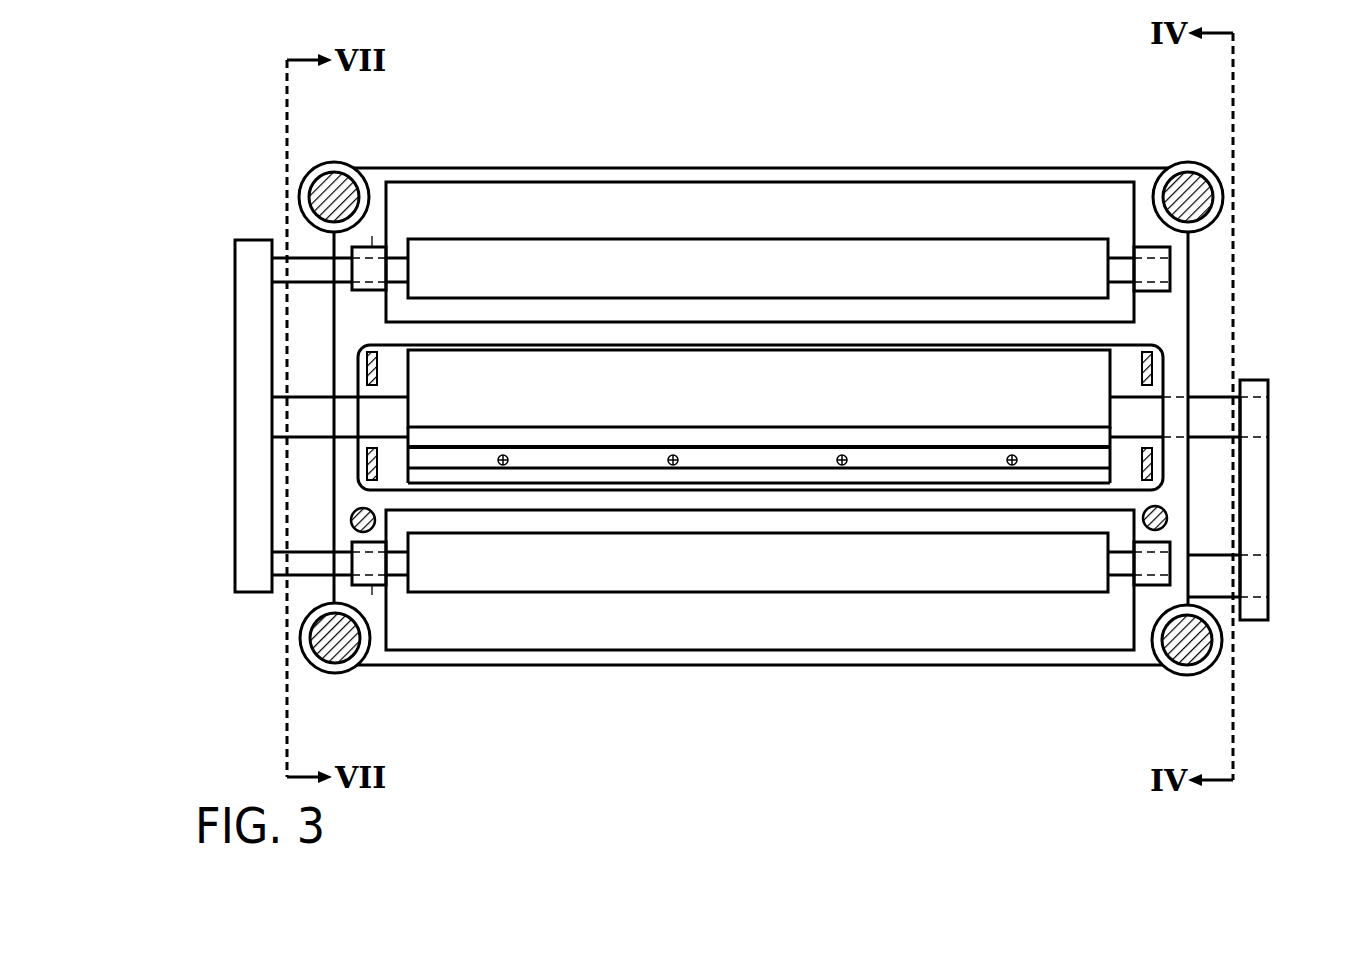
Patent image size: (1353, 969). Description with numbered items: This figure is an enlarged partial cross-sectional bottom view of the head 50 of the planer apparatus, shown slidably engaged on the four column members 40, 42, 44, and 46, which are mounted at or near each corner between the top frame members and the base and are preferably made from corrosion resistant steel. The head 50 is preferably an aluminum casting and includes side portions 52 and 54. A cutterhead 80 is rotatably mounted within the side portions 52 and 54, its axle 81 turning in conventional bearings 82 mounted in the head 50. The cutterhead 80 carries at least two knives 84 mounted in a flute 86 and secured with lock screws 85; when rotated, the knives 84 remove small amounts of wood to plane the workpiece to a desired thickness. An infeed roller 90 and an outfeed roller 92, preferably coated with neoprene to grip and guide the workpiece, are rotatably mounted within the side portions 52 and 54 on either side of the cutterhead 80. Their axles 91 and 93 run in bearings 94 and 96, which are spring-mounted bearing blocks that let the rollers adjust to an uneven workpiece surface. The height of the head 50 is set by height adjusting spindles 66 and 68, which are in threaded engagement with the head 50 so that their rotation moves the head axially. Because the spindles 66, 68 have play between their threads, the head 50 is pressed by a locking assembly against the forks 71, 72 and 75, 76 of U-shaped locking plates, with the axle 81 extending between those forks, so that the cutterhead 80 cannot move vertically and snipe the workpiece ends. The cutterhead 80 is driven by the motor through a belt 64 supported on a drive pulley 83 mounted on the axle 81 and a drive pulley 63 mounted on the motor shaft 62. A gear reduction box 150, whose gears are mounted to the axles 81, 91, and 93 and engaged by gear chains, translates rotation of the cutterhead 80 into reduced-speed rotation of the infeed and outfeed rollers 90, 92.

The column member 40 is at (333, 657).
The column member 42 is at (1187, 655).
The column member 44 is at (1188, 178).
The column member 46 is at (334, 183).
The head 50 is at (752, 677).
The side portion 52 is at (368, 317).
The side portion 54 is at (1153, 322).
The shaft 62 is at (1205, 563).
The drive pulley 63 is at (1255, 553).
The belt 64 is at (1257, 481).
The height adjusting spindle 66 is at (352, 516).
The height adjusting spindle 68 is at (1163, 508).
The fork 71 is at (367, 365).
The fork 72 is at (367, 460).
The fork 75 is at (1140, 358).
The fork 76 is at (1140, 458).
The cutterhead 80 is at (604, 395).
The axle 81 is at (391, 395).
The bearing 82 is at (1172, 393).
The drive pulley 83 is at (1257, 390).
The knife 84 is at (907, 447).
The lock screw 85 is at (1008, 456).
The flute 86 is at (818, 437).
The infeed roller 90 is at (604, 574).
The axle 91 is at (397, 588).
The outfeed roller 92 is at (604, 280).
The axle 93 is at (396, 250).
The bearing 94 is at (372, 587).
The bearing 96 is at (372, 245).
The gear reduction box 150 is at (248, 596).